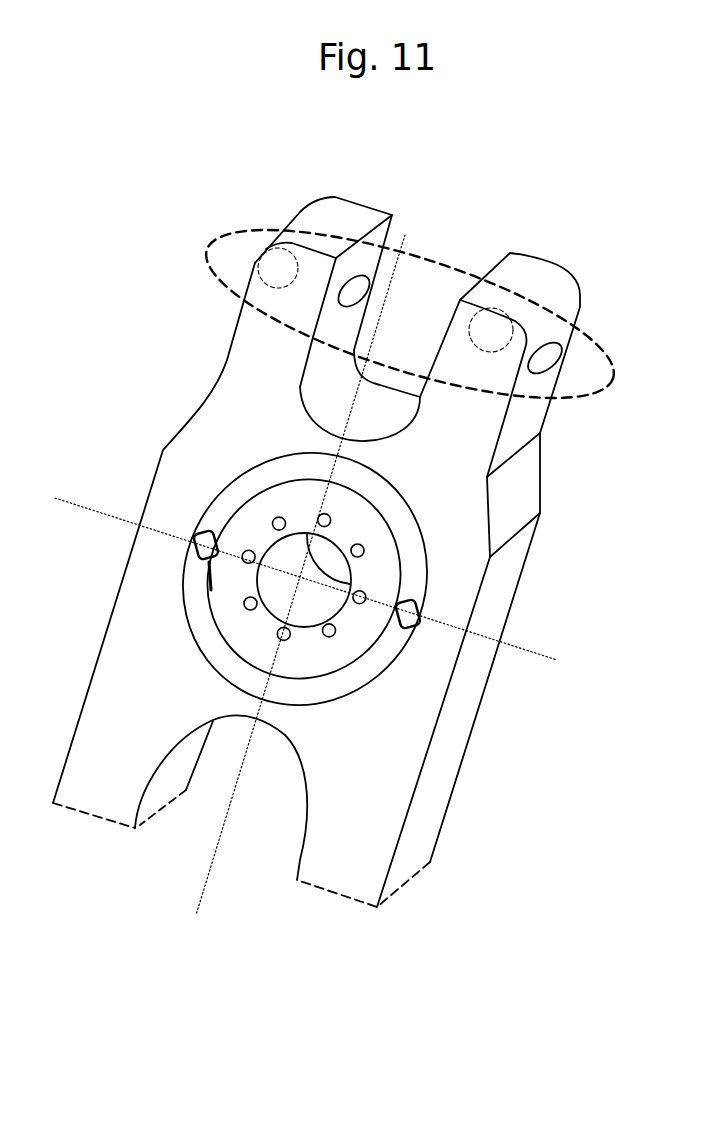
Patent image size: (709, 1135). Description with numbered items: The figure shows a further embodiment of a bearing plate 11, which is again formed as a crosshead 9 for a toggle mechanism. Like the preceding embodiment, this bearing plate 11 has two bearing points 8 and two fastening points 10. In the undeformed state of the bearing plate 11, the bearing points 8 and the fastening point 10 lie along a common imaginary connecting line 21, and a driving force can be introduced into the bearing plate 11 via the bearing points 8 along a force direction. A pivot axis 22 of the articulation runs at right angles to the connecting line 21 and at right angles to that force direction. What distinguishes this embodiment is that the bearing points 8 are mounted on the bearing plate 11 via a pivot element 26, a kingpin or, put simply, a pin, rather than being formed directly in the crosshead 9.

The bearing point 8 is at (250, 530).
The crosshead 9 is at (326, 552).
The fastening point 10 is at (608, 364).
The bearing plate 11 is at (437, 793).
The connecting line 21 is at (208, 875).
The pivot axis 22 is at (420, 622).
The pivot element 26 is at (412, 604).